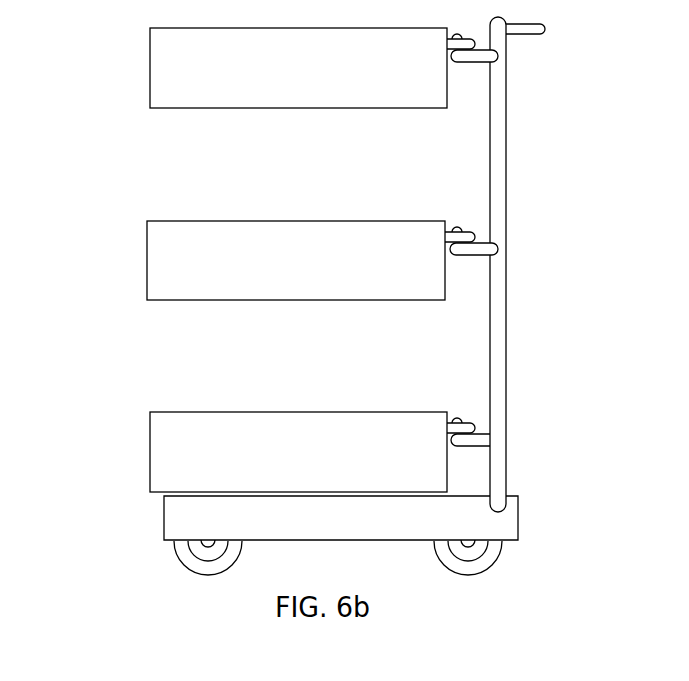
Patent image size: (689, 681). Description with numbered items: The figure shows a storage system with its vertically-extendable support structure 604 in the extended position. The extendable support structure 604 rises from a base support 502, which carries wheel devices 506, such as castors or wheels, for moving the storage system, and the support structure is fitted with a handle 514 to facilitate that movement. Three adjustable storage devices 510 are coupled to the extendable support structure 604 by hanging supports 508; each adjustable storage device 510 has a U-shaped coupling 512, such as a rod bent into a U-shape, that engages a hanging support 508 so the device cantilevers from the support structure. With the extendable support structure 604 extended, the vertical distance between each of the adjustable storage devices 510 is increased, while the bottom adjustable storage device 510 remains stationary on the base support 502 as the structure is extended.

The base support 502 is at (520, 512).
The wheel devices 506 is at (182, 567).
The hanging supports 508 is at (487, 242).
The adjustable storage devices 510 is at (150, 68).
The U-shaped coupling 512 is at (470, 231).
The handle 514 is at (545, 30).
The extendable support structure 604 is at (506, 342).